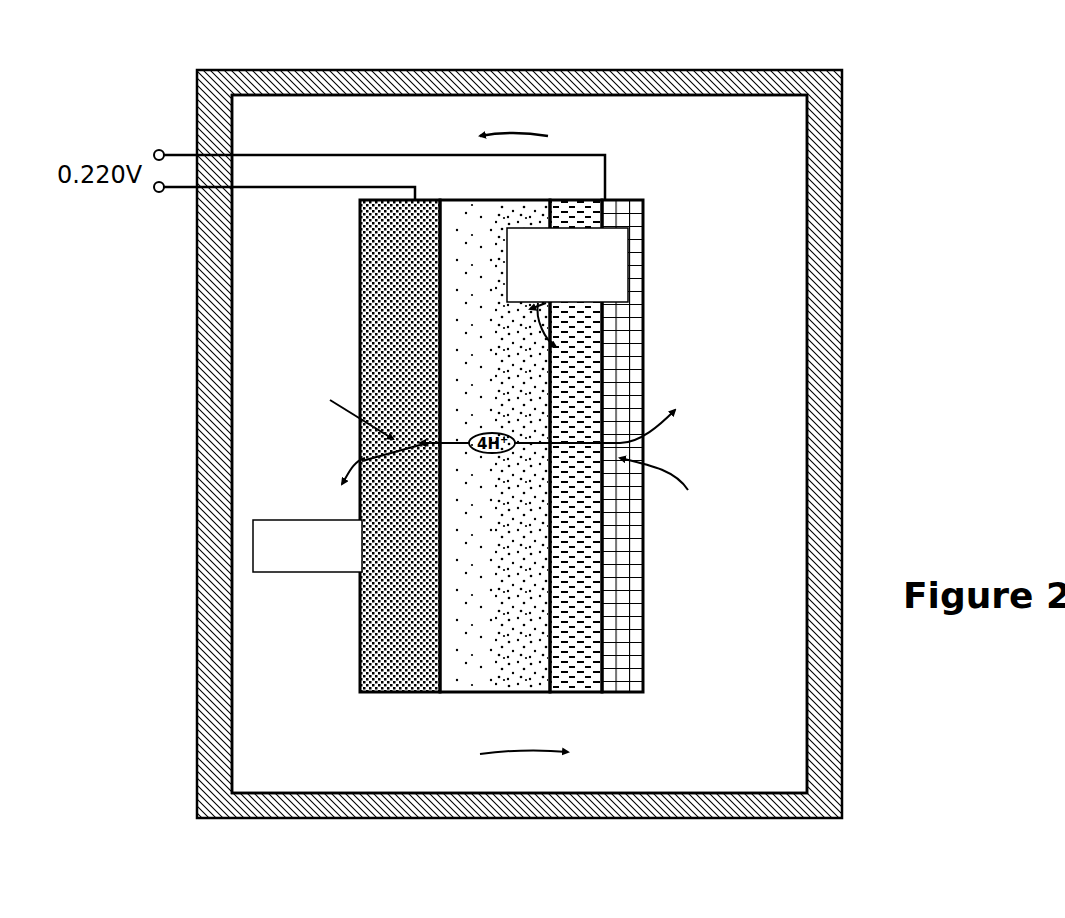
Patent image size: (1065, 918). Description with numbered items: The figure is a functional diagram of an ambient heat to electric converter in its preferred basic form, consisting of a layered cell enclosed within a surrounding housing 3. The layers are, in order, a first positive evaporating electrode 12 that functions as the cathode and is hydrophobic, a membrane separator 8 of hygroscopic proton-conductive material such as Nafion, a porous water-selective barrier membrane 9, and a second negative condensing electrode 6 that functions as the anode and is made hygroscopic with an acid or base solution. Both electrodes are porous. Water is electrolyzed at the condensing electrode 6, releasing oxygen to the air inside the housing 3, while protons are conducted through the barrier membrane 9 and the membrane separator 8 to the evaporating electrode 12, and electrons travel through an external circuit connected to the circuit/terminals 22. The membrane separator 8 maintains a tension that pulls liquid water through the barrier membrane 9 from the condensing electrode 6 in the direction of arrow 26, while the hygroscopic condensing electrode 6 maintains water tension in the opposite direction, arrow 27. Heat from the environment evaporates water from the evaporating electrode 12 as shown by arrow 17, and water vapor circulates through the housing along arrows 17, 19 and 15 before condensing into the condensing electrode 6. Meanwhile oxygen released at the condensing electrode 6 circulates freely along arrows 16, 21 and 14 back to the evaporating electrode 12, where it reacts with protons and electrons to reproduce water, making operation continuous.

The housing 3 is at (843, 282).
The condensing electrode 6 is at (625, 593).
The membrane separator 8 is at (488, 695).
The porous barrier membrane 9 is at (578, 660).
The evaporating electrode 12 is at (362, 645).
The directional arrow 14 is at (352, 420).
The directional arrow 15 is at (688, 503).
The directional arrow 16 is at (645, 438).
The directional arrow 17 is at (360, 462).
The directional arrow 19 is at (540, 758).
The directional arrow 21 is at (556, 135).
The circuit/terminals 22 is at (342, 116).
The directional arrow 26 is at (553, 343).
The directional arrow 27 is at (605, 312).